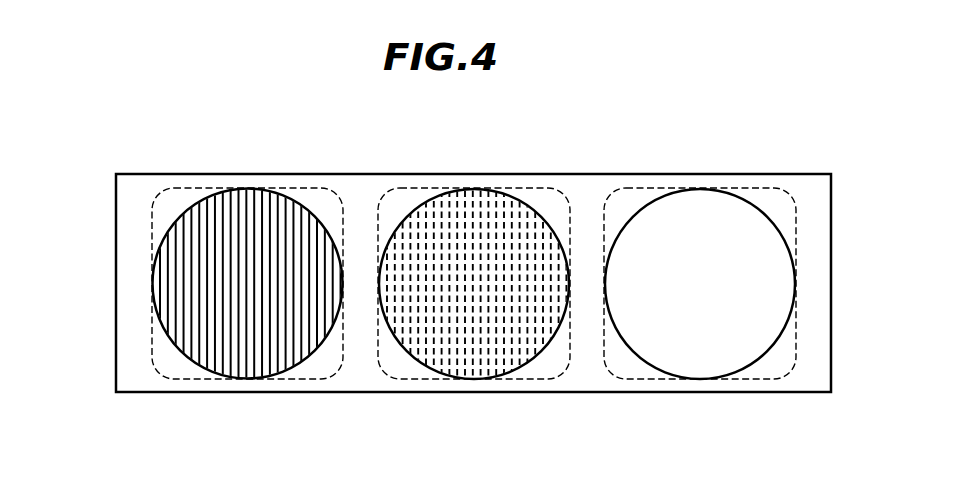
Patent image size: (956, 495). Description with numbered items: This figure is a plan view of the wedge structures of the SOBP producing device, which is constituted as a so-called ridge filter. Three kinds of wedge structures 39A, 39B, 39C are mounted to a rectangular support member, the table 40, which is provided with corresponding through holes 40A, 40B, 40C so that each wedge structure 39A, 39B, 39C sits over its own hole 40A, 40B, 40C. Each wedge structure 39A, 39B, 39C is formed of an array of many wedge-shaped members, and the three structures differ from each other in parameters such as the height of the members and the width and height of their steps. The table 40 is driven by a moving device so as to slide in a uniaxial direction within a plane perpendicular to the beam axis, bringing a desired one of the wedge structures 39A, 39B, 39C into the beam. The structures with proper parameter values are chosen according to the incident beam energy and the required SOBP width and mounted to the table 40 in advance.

The support member (table) 40 is at (130, 338).
The through hole 40A is at (195, 210).
The through hole 40B is at (423, 210).
The through hole 40C is at (648, 208).
The wedge structure 39A is at (277, 355).
The wedge structure 39B is at (503, 353).
The wedge structure 39C is at (727, 352).